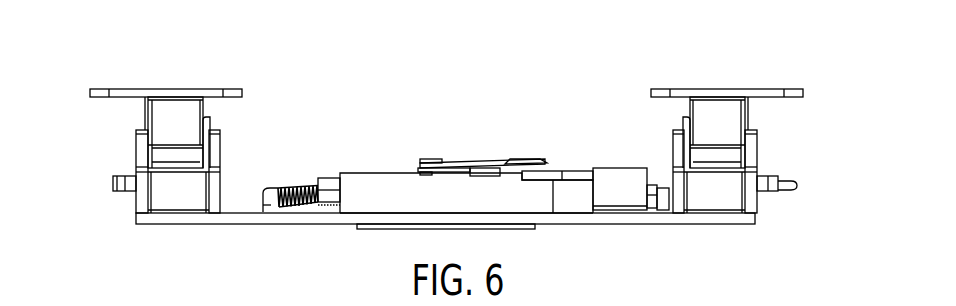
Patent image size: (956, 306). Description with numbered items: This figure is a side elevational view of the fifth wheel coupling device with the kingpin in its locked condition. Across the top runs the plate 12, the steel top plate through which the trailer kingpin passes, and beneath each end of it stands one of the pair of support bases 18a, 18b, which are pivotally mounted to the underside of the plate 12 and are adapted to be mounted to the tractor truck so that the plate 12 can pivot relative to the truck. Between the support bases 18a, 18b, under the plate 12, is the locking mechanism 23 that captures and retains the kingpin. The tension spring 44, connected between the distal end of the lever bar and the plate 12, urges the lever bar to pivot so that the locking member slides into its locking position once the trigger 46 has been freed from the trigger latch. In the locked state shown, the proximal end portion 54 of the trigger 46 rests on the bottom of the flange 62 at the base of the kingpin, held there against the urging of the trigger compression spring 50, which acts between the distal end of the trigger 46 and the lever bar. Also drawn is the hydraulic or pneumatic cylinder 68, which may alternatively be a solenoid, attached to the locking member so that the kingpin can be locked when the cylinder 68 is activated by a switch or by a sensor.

The plate 12 is at (309, 218).
The support base 18a is at (718, 92).
The support base 18b is at (170, 92).
The tension spring 44 is at (298, 188).
The locking mechanism 23 is at (564, 154).
The hydraulic or pneumatic cylinder 68 is at (620, 195).
The flange 62 is at (422, 168).
The trigger 46 is at (460, 162).
The proximal end portion 54 is at (443, 161).
The trigger compression spring 50 is at (552, 161).